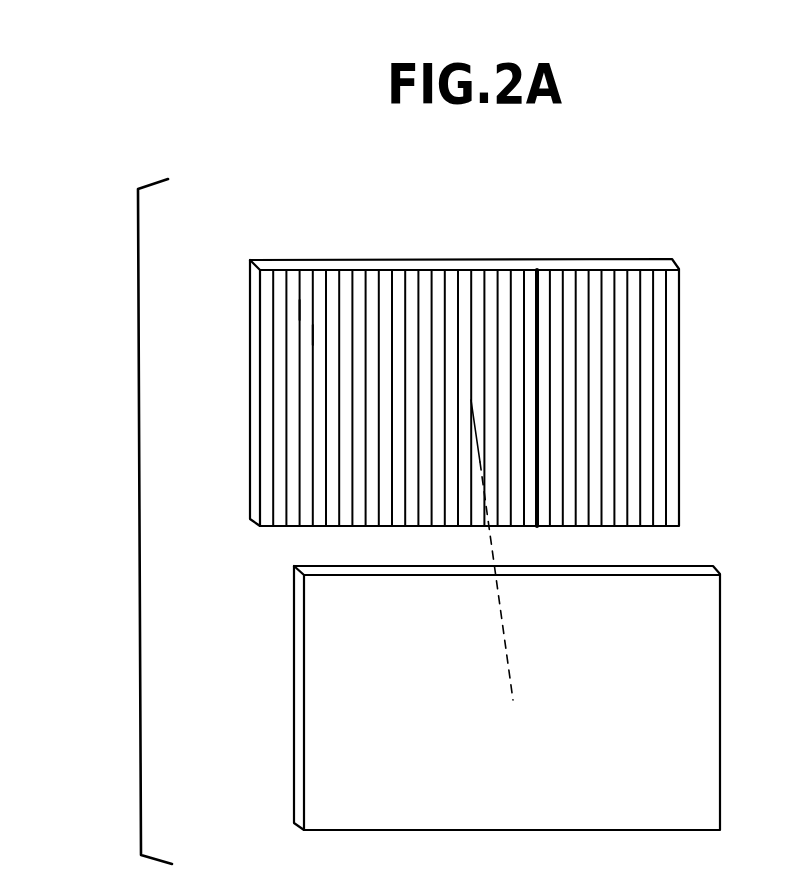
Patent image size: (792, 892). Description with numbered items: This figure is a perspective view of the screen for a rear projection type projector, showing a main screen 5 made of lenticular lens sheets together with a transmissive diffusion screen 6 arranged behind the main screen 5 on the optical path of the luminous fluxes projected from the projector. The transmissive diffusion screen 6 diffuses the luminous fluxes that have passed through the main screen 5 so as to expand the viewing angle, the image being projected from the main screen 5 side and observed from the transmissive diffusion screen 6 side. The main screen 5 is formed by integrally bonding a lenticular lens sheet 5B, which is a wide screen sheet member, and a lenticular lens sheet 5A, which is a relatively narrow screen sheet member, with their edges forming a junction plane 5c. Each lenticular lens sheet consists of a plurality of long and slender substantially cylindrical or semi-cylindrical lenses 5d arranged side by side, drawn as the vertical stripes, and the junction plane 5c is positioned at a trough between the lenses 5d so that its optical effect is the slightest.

The main screen 5 is at (453, 337).
The lenticular lens sheet 5A is at (677, 237).
The lenticular lens sheet 5B is at (254, 240).
The junction plane 5c is at (538, 311).
The lenses 5d is at (320, 333).
The transmissive diffusion screen 6 is at (711, 640).